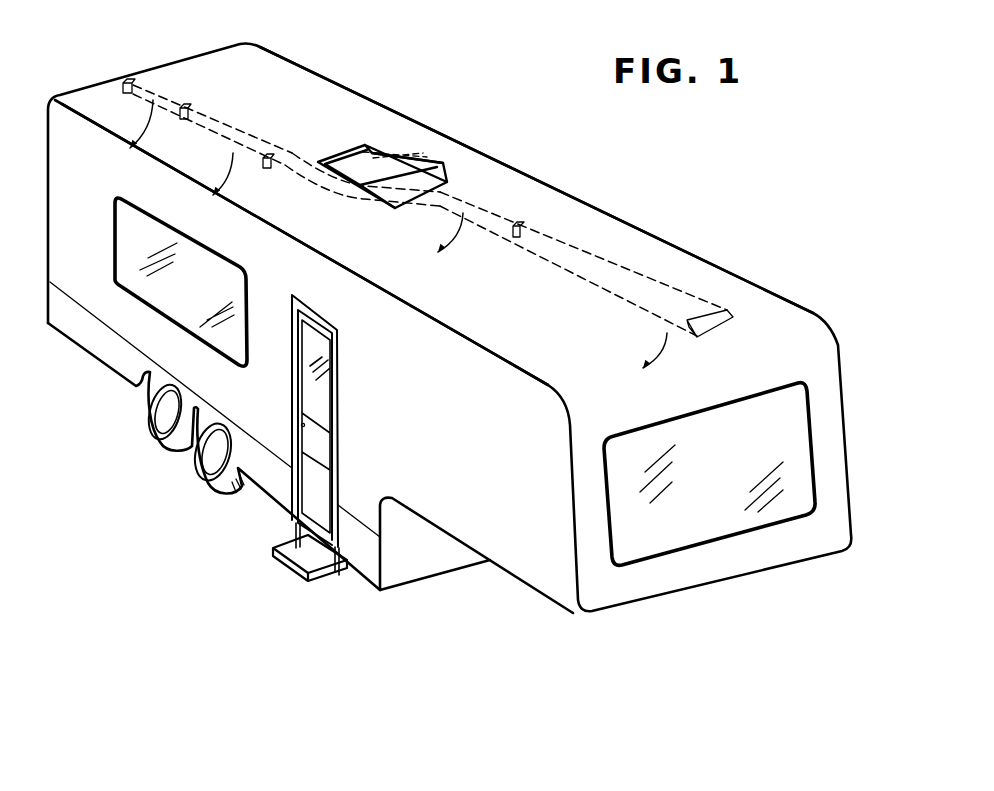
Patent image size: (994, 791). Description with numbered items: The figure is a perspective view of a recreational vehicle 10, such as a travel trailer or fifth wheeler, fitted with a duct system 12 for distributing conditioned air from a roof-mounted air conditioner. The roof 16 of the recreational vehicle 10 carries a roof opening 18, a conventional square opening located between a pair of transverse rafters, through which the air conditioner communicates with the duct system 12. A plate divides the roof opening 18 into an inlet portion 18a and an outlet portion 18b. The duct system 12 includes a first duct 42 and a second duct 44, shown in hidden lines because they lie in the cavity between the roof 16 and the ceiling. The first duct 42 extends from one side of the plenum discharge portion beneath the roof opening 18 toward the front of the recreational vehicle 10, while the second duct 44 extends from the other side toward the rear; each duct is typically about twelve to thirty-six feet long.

The recreational vehicle 10 is at (449, 307).
The duct system 12 is at (407, 169).
The roof 16 is at (650, 257).
The roof opening 18 is at (452, 110).
The inlet portion 18a is at (378, 167).
The outlet portion 18b is at (410, 193).
The first duct 42 is at (565, 230).
The second duct 44 is at (173, 87).